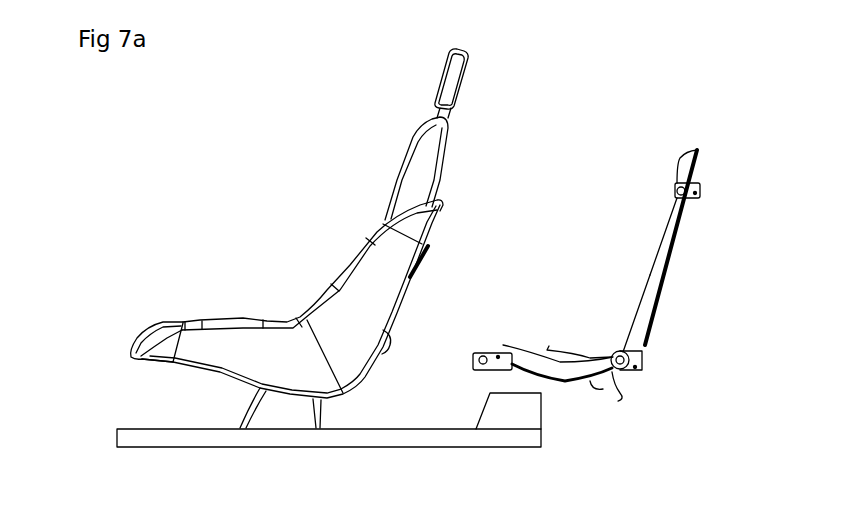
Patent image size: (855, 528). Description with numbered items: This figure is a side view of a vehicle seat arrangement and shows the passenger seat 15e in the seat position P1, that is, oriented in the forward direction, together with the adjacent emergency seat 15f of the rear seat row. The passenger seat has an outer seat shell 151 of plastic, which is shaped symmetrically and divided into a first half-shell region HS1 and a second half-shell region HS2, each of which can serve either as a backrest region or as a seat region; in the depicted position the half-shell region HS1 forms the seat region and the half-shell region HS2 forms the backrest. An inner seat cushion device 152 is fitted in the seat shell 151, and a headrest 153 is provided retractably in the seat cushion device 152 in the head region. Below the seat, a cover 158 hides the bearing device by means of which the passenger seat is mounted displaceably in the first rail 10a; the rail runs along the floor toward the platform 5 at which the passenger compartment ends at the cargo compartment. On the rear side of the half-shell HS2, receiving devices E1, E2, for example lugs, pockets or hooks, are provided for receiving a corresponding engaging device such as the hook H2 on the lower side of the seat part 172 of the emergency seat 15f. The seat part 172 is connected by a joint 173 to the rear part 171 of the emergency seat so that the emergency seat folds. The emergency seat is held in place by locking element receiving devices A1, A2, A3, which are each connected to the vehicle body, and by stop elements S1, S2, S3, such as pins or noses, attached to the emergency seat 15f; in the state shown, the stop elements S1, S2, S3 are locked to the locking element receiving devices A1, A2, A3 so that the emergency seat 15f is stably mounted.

The seat position P1 is at (302, 166).
The first half-shell region HS1 is at (254, 303).
The second half-shell region HS2 is at (450, 236).
The passenger seat 15e is at (218, 318).
The outer seat shell 151 is at (200, 353).
The inner seat cushion device 152 is at (437, 157).
The headrest 153 is at (458, 83).
The receiving device E1 is at (423, 258).
The receiving device E2 is at (390, 343).
The cover for a bearing device 158 is at (283, 415).
The first rail 10a is at (157, 436).
The platform 5 is at (515, 417).
The locking element receiving device A1 is at (703, 193).
The stop element S1 is at (673, 183).
The rear part 171 is at (658, 265).
The emergency seat 15f is at (663, 217).
The joint 173 is at (623, 355).
The locking element receiving device A2 is at (643, 361).
The stop element S2 is at (617, 356).
The engaging device H2 is at (622, 400).
The seat part 172 is at (530, 345).
The locking element receiving device A3 is at (475, 364).
The stop element S3 is at (483, 352).